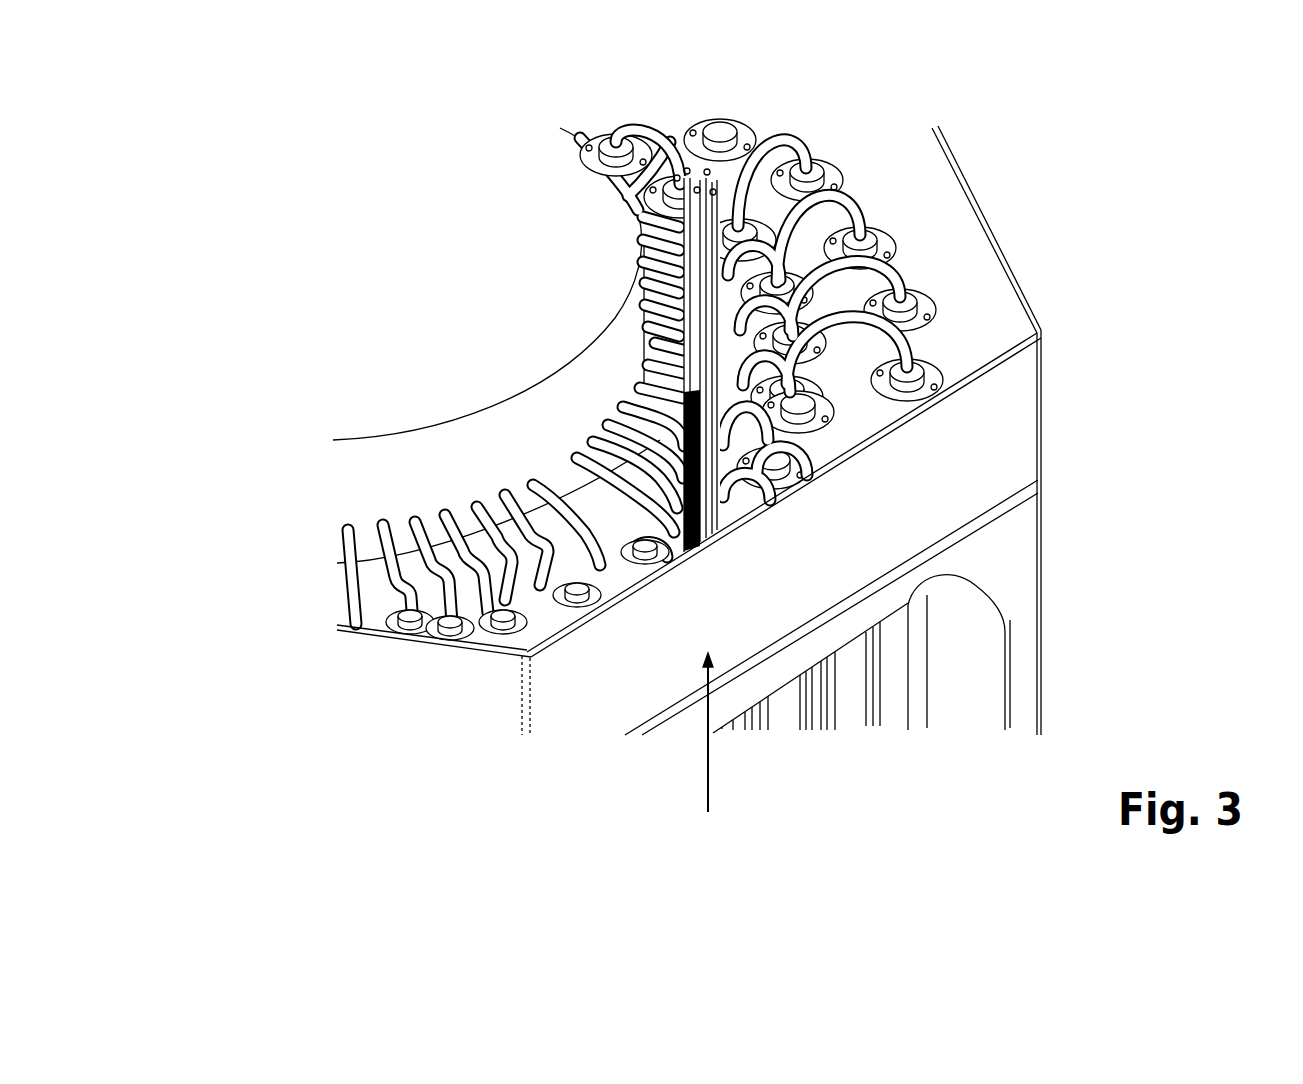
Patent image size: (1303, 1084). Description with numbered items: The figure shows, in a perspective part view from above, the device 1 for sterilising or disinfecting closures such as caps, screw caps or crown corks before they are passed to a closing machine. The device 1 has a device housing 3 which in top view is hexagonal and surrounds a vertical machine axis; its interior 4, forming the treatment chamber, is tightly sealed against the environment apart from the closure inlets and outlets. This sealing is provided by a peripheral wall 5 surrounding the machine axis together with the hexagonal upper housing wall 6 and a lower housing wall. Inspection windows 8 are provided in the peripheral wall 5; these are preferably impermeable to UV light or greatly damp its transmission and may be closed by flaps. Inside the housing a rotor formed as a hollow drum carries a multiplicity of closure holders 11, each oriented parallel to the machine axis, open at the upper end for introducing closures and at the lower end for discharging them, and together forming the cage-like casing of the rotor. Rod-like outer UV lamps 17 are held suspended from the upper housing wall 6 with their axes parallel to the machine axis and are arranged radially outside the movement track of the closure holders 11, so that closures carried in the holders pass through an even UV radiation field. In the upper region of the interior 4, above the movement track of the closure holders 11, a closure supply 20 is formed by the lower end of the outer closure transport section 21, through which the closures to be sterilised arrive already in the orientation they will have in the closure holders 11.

The device 1 is at (316, 178).
The device housing 3 is at (1066, 496).
The interior 4 is at (967, 666).
The peripheral wall 5 is at (590, 684).
The upper housing wall 6 is at (848, 299).
The inspection windows 8 is at (1005, 622).
The closure holders 11 is at (833, 725).
The outer UV lamps 17 is at (897, 700).
The closure supply 20 is at (708, 762).
The closure transport section 21 is at (663, 293).